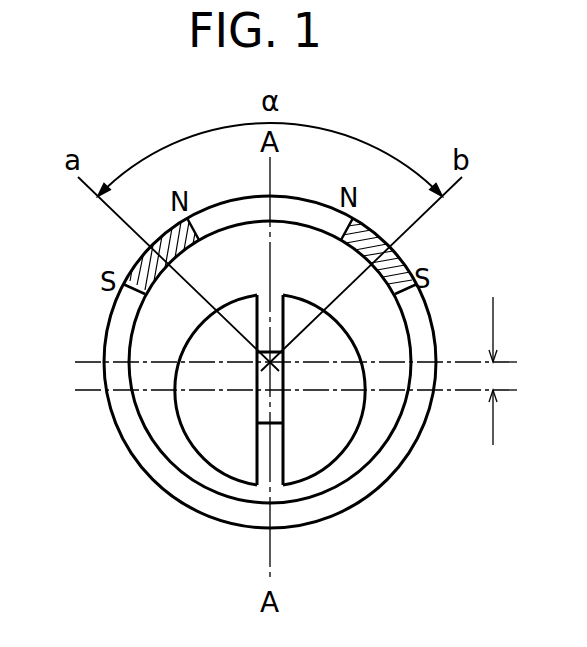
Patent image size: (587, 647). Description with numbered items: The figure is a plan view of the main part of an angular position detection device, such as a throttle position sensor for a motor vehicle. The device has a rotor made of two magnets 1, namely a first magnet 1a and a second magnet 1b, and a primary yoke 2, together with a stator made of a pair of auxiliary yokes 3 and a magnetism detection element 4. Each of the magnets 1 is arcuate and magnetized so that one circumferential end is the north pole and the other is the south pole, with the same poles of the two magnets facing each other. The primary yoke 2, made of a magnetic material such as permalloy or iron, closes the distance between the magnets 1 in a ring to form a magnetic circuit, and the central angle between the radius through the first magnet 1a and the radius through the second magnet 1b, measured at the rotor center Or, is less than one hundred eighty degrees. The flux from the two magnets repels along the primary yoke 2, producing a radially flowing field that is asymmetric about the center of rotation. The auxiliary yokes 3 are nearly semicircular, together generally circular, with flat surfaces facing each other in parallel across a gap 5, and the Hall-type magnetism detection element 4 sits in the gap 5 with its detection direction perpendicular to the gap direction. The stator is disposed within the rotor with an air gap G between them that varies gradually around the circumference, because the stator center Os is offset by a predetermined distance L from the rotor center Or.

The magnets 1 is at (266, 256).
The first magnet 1a is at (146, 260).
The second magnet 1b is at (389, 260).
The primary yoke 2 is at (118, 324).
The auxiliary yokes 3 is at (203, 425).
The magnetism detection element 4 is at (260, 418).
The gap 5 is at (265, 480).
The air gap G is at (143, 385).
The predetermined distance L is at (504, 371).
The center of the rotor Or is at (271, 363).
The center of the stator Os is at (272, 391).